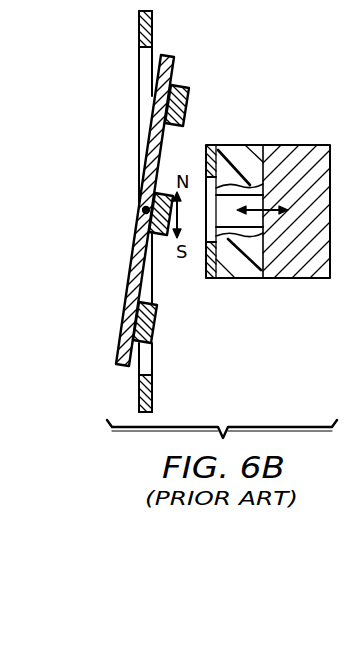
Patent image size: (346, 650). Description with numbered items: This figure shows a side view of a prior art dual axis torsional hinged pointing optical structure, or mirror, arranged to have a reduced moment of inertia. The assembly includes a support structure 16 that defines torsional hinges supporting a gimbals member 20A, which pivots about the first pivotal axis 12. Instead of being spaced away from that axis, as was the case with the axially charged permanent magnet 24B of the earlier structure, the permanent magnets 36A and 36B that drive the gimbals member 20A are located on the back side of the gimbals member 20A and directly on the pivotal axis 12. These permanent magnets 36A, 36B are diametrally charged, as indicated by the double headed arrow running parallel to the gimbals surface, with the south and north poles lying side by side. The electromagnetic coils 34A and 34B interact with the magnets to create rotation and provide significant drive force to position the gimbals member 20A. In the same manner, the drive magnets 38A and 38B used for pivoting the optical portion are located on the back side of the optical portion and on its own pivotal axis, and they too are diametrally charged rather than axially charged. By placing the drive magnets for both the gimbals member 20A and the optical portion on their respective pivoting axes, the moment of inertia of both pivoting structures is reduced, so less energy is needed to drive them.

The first pivotal axis 12 is at (136, 212).
The support structure 16 is at (138, 387).
The gimbals member 20A is at (102, 345).
The permanent magnet 24B is at (140, 78).
The electromagnetic coil 34A is at (268, 253).
The electromagnetic coil 34B is at (277, 278).
The permanent magnet 36A is at (122, 192).
The permanent magnet 36B is at (143, 205).
The drive magnet 38A is at (155, 320).
The drive magnet 38B is at (185, 85).